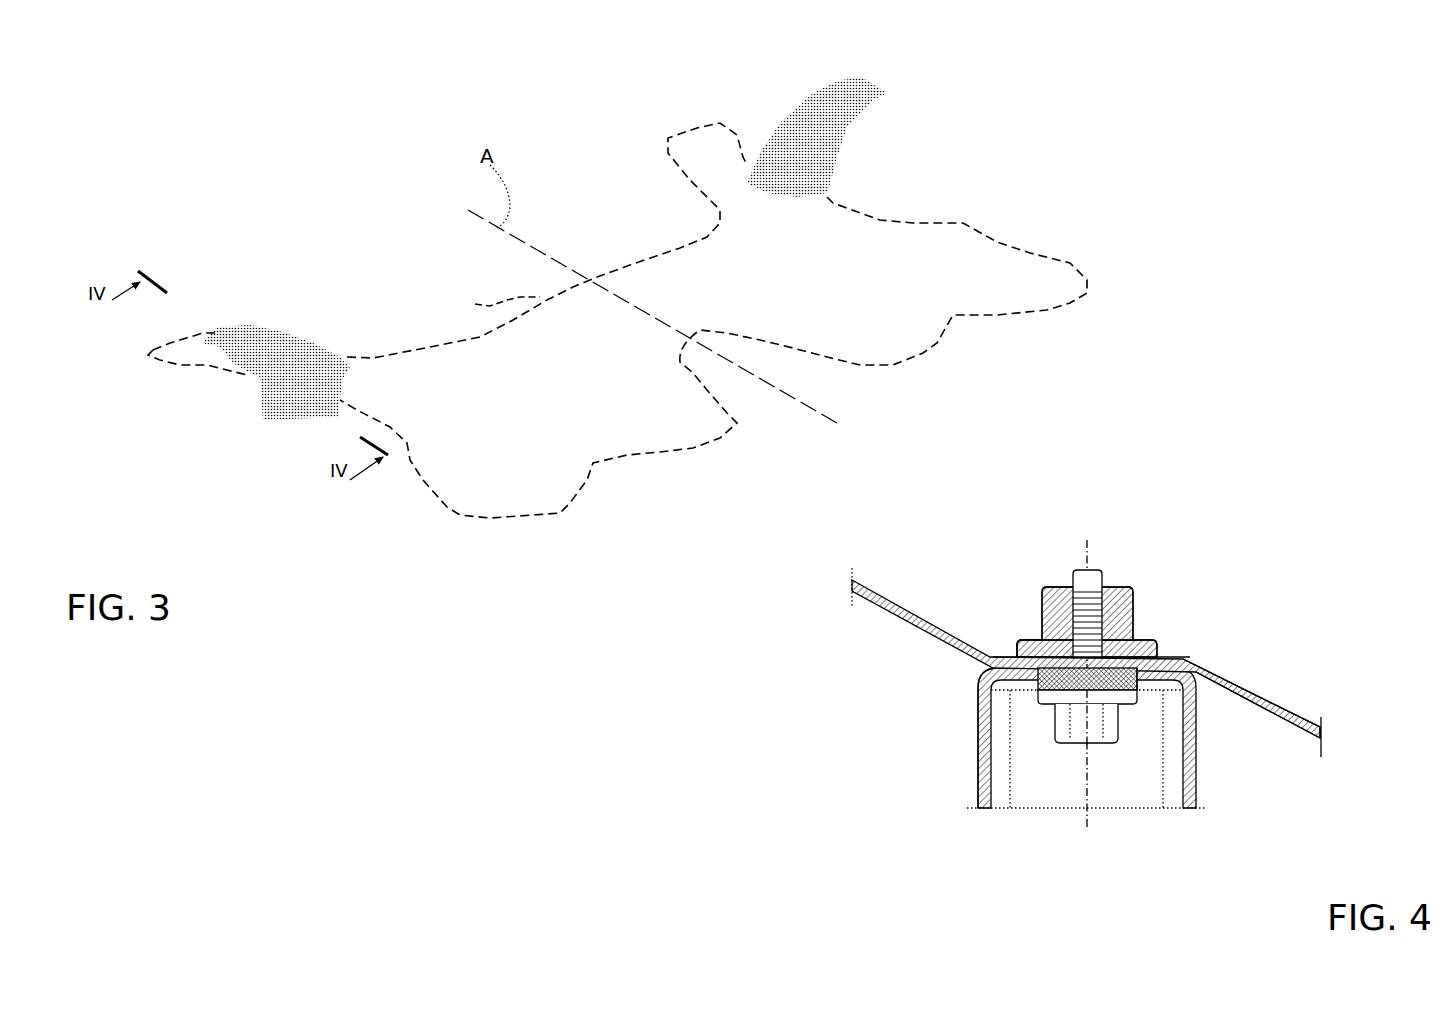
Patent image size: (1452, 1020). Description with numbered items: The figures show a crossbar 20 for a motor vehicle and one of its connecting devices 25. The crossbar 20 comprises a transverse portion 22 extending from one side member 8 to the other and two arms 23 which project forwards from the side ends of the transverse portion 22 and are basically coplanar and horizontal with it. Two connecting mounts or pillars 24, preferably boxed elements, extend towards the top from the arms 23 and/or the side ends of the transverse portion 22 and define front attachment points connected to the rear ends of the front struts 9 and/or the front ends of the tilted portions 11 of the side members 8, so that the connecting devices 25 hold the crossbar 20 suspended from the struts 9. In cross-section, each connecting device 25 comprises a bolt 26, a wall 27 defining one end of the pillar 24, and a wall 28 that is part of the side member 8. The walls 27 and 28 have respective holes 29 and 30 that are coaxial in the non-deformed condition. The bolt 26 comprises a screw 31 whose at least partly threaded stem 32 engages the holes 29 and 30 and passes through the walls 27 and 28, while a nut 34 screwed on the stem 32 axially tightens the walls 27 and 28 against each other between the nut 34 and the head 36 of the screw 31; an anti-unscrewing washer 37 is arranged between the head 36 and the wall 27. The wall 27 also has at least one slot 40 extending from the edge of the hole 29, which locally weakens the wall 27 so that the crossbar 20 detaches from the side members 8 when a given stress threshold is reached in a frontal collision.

In FIG. 4, the side member 8 is at (1295, 712).
In FIG. 4, the front strut 9 is at (898, 605).
In FIG. 4, the tilted portion 11 is at (1303, 732).
In FIG. 3, the crossbar 20 is at (443, 520).
In FIG. 3, the transverse portion 22 is at (475, 304).
In FIG. 3, the arm 23 is at (668, 150).
In FIG. 3, the pillar 24 is at (300, 378).
In FIG. 4, the pillar 24 is at (1196, 782).
In FIG. 4, the connecting device 25 is at (1163, 628).
In FIG. 4, the bolt 26 is at (1130, 580).
In FIG. 3, the wall 27 is at (258, 340).
In FIG. 4, the wall 27 is at (978, 757).
In FIG. 4, the wall 28 is at (1173, 656).
In FIG. 4, the hole 29 is at (1086, 692).
In FIG. 4, the hole 30 is at (1042, 622).
In FIG. 4, the screw 31 is at (1063, 560).
In FIG. 4, the stem 32 is at (1060, 578).
In FIG. 4, the nut 34 is at (1150, 625).
In FIG. 4, the head 36 is at (1118, 704).
In FIG. 4, the washer 37 is at (1028, 690).
In FIG. 4, the slot 40 is at (1138, 690).